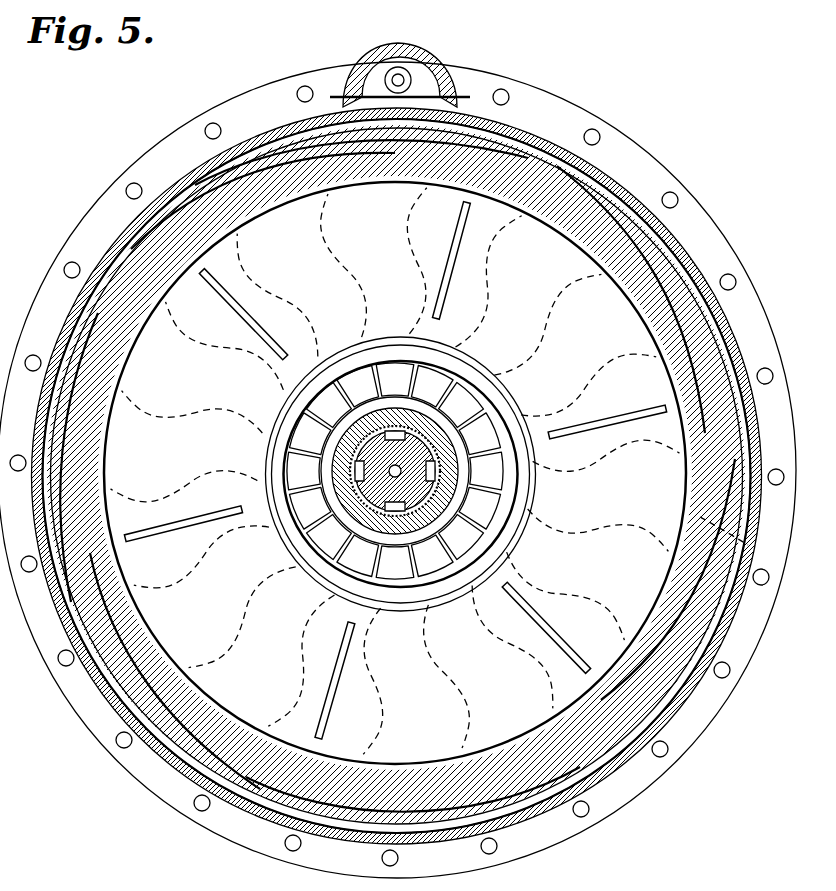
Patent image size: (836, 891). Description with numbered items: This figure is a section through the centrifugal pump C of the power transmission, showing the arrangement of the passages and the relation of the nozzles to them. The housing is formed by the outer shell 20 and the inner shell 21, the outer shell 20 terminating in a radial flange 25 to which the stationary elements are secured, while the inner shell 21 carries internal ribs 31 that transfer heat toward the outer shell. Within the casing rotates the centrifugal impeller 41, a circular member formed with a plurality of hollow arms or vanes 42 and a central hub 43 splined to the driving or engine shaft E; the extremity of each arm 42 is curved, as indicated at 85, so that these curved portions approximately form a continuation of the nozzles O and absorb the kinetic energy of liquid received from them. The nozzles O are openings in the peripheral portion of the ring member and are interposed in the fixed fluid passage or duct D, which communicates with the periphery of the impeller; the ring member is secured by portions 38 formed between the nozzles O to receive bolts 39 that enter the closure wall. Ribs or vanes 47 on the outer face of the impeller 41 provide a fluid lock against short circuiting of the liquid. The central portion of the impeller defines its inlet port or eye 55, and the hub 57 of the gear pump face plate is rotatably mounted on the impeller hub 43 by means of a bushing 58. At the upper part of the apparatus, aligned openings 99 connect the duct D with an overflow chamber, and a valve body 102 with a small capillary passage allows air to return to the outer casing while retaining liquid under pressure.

The valve body 102 is at (385, 72).
The aligned openings 99 is at (418, 64).
The portions 38 is at (499, 154).
The radial flange 25 is at (568, 112).
The centrifugal pump C is at (241, 236).
The nozzles O is at (612, 205).
The fluid passage or duct D is at (643, 225).
The outer shell 20 is at (700, 248).
The inner shell 21 is at (718, 278).
The internal ribs 31 is at (718, 318).
The curved portions 85 is at (352, 226).
The hollow arms or vanes 42 is at (428, 305).
The centrifugal impeller 41 is at (455, 262).
The ribs or vanes 47 is at (606, 420).
The bushing 58 is at (358, 455).
The driving or engine shaft E is at (360, 466).
The central hub 43 is at (362, 477).
The inlet port or eye 55 is at (498, 478).
The hub 57 is at (332, 572).
The bolts 39 is at (748, 515).